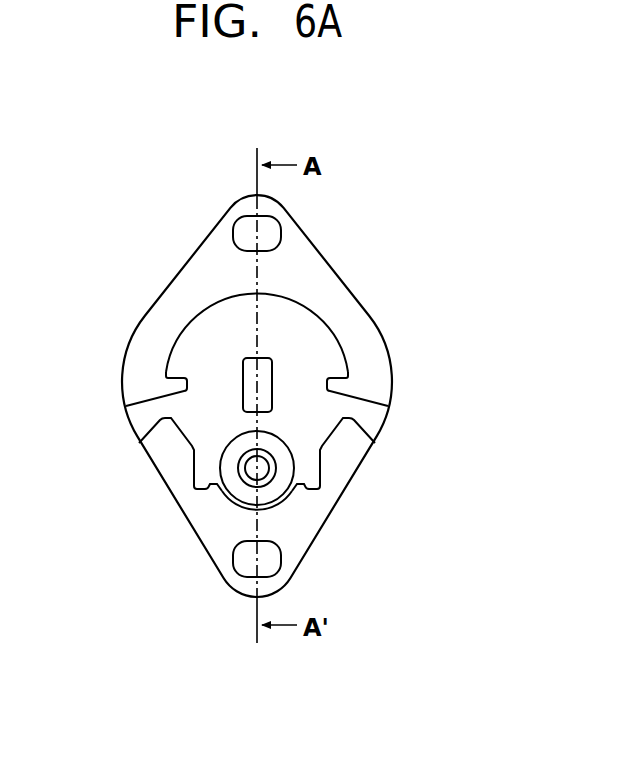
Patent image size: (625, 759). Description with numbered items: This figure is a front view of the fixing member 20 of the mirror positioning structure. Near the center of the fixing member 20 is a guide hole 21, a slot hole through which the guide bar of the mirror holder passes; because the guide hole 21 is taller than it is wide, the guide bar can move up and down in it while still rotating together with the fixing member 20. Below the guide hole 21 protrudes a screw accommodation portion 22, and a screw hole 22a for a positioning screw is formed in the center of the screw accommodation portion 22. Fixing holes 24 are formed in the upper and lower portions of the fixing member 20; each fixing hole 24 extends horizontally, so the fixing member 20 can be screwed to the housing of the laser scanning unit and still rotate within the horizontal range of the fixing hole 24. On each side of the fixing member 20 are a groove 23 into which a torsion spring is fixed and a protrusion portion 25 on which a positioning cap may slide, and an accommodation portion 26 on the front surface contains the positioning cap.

The fixing member 20 is at (136, 535).
The guide hole 21 is at (270, 377).
The screw accommodation portion 22 is at (276, 468).
The screw hole 22a is at (246, 483).
The groove 23 is at (374, 402).
The fixing hole 24 is at (268, 235).
The protrusion portion 25 is at (343, 357).
The accommodation portion 26 is at (233, 350).